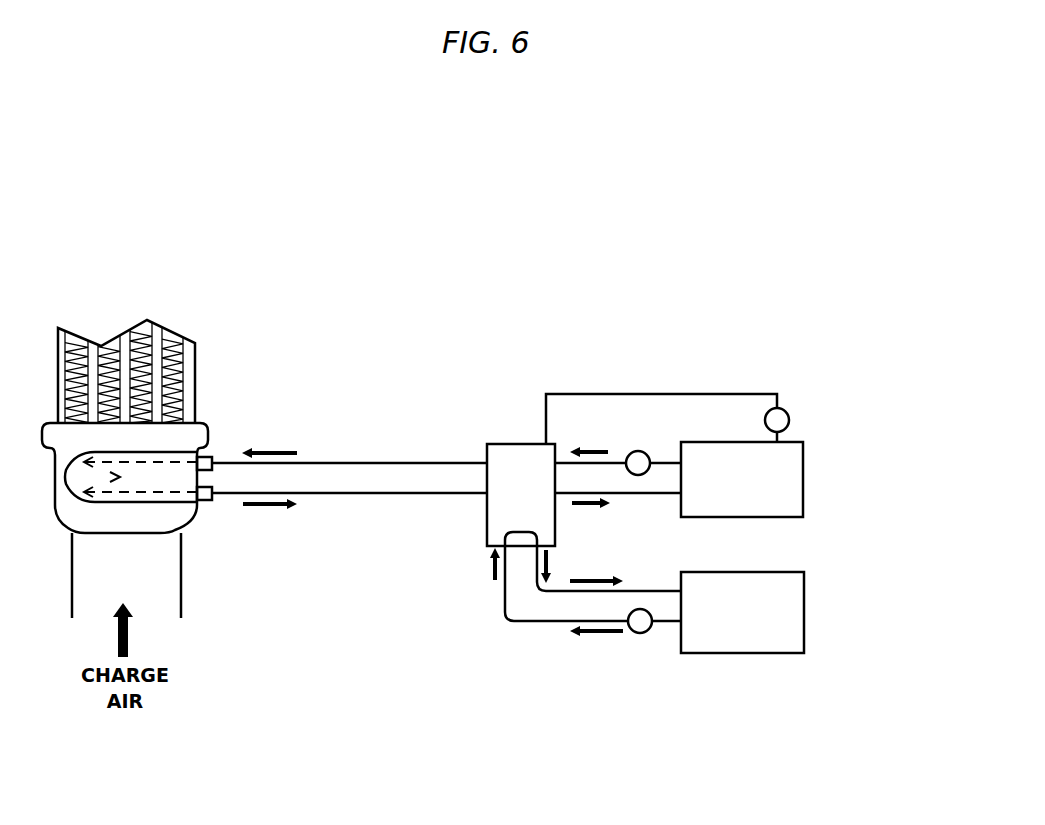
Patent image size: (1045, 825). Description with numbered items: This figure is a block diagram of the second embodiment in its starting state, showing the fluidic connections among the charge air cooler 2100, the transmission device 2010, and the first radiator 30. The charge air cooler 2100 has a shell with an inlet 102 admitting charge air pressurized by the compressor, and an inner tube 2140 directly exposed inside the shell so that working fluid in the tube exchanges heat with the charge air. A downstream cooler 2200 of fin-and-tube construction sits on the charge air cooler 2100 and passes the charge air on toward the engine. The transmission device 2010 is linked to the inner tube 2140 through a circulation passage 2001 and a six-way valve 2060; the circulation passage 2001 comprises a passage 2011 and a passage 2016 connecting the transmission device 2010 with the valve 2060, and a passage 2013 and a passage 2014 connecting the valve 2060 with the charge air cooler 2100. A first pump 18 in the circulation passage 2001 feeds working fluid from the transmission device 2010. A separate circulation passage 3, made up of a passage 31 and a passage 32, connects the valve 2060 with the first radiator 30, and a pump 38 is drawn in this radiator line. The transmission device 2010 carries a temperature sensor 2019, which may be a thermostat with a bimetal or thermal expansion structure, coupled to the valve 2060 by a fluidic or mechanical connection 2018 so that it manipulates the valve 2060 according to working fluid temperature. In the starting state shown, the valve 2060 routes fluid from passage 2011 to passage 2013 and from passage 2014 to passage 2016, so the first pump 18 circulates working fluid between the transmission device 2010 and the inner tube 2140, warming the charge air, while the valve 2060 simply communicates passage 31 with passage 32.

The downstream cooler 2200 is at (202, 342).
The charge air cooler 2100 is at (203, 412).
The inner tube 2140 is at (180, 462).
The passage 2013 is at (229, 462).
The passage 2014 is at (228, 502).
The inlet 102 is at (182, 578).
The circulation passage 2001 is at (453, 410).
The valve 2060 is at (510, 444).
The passage 2011 is at (562, 457).
The passage 2016 is at (562, 495).
The first pump 18 is at (647, 449).
The fluidic and/or mechanical connection 2018 is at (743, 393).
The temperature sensor 2019 is at (784, 403).
The transmission device 2010 is at (803, 483).
The transmission oil pump 38 is at (651, 609).
The first radiator 30 is at (804, 612).
The passage 31 is at (535, 563).
The passage 32 is at (625, 640).
The circulation passage 3 is at (594, 619).